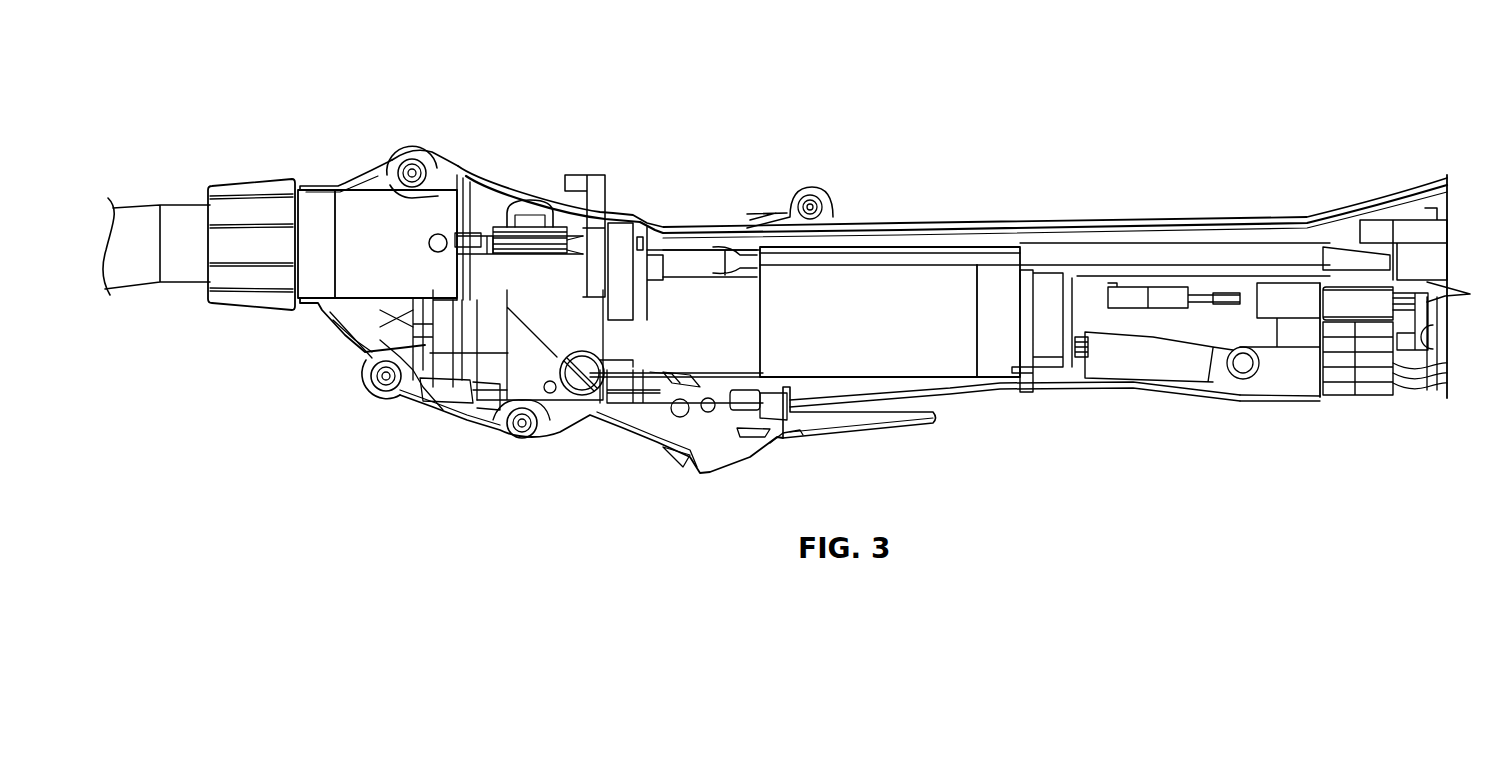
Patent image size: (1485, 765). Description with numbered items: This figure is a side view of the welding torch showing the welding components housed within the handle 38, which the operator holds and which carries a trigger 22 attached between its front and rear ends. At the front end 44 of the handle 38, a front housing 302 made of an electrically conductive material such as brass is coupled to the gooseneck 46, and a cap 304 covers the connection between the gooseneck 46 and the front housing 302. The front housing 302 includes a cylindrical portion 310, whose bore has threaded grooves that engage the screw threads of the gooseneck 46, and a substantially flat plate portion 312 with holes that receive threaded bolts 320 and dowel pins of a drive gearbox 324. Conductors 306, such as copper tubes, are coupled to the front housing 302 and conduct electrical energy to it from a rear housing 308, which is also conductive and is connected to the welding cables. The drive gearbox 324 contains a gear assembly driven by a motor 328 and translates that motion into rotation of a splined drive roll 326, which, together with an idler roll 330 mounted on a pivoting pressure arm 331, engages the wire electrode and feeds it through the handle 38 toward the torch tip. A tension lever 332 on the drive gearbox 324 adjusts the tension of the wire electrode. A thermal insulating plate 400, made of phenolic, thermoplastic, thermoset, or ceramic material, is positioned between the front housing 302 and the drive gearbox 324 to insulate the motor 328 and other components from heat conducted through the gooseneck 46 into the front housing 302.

The trigger 22 is at (867, 438).
The handle 38 is at (902, 230).
The front end 44 is at (298, 150).
The gooseneck 46 is at (144, 213).
The front housing 302 is at (441, 200).
The cap 304 is at (262, 185).
The conductors 306 is at (1266, 255).
The rear housing 308 is at (1413, 228).
The cylindrical portion 310 is at (372, 218).
The plate portion 312 is at (440, 337).
The threaded bolts 320 is at (366, 370).
The drive gearbox 324 is at (483, 323).
The drive roll 326 is at (537, 205).
The motor 328 is at (922, 312).
The idler roll 330 is at (526, 220).
The pressure arm 331 is at (563, 297).
The tension lever 332 is at (588, 172).
The thermal insulating plate 400 is at (463, 337).